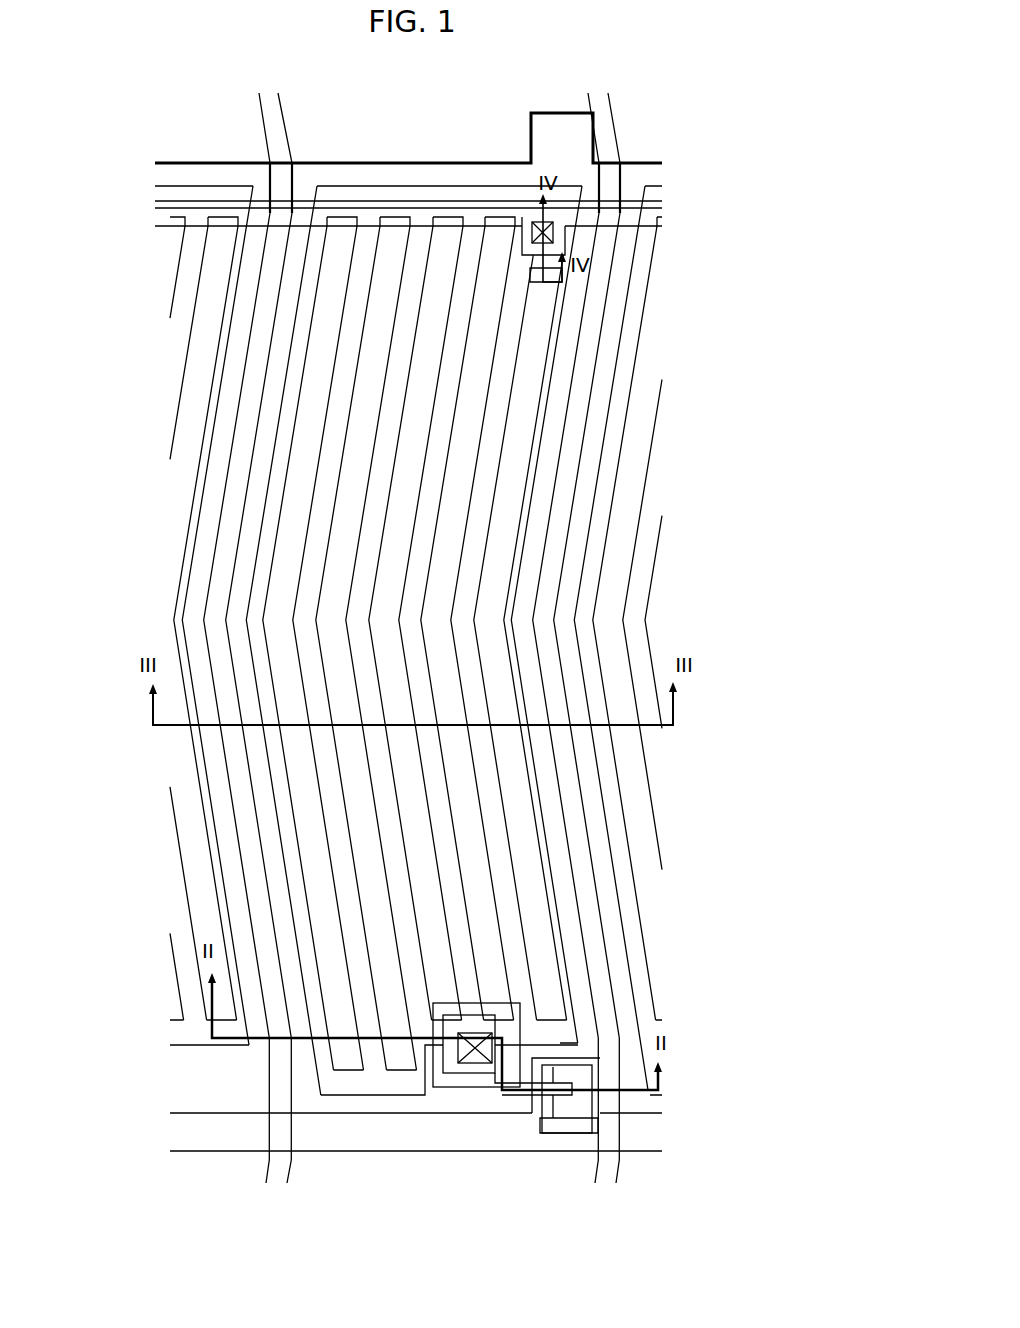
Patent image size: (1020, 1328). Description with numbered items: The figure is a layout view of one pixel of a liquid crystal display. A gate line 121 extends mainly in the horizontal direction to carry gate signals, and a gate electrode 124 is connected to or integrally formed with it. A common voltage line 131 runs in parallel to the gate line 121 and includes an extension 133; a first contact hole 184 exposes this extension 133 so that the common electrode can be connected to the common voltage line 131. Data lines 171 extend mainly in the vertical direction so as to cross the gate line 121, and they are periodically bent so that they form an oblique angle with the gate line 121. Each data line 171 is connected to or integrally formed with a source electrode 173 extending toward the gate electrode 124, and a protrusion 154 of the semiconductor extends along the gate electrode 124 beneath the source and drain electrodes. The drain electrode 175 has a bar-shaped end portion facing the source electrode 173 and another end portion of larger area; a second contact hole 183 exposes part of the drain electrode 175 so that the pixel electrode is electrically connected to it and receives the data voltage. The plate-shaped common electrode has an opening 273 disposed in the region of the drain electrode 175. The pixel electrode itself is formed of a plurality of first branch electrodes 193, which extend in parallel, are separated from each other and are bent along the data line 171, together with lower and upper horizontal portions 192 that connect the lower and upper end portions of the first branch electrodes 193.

The gate line 121 is at (193, 1113).
The gate electrode 124 is at (597, 1098).
The common voltage line 131 is at (650, 228).
The extension 133 is at (568, 235).
The protrusion 154 is at (545, 1118).
The data line 171 is at (260, 410).
The source electrode 173 is at (587, 1133).
The drain electrode 175 is at (540, 1095).
The second contact hole 183 is at (475, 1065).
The first contact hole 184 is at (532, 228).
The horizontal portion 192 is at (352, 184).
The first branch electrode 193 is at (302, 563).
The opening 273 is at (445, 1090).